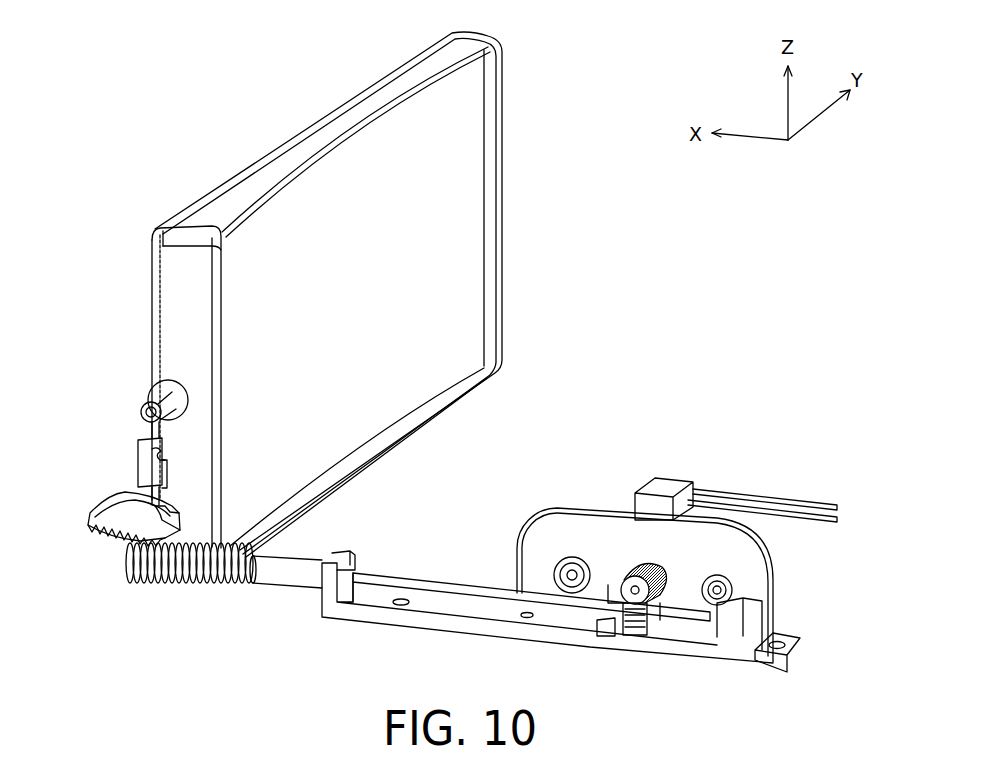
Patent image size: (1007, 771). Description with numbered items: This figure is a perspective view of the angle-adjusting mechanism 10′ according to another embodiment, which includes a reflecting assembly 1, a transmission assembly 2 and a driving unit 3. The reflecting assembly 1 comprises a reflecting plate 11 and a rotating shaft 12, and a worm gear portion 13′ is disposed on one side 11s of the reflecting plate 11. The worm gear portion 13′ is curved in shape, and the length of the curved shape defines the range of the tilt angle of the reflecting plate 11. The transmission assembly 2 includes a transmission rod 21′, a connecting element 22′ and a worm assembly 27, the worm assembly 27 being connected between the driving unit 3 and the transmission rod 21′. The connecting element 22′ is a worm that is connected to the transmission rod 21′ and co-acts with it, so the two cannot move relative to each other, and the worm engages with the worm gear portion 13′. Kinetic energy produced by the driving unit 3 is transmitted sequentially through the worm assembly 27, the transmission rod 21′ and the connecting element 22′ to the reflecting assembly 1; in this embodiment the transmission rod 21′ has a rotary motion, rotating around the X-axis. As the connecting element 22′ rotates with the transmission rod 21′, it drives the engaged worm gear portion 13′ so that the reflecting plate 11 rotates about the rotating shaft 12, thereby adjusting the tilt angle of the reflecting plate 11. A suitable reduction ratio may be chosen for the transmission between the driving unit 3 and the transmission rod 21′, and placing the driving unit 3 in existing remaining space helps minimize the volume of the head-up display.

The angle-adjusting mechanism 10′ is at (80, 21).
The reflecting assembly 1 is at (56, 292).
The reflecting plate 11 is at (170, 310).
The side of the reflecting plate 11s is at (173, 262).
The rotating shaft 12 is at (150, 397).
The worm gear portion 13′ is at (120, 503).
The transmission assembly 2 is at (416, 510).
The transmission rod 21′ is at (370, 585).
The connecting element 22′ is at (183, 582).
The driving unit 3 is at (717, 513).
The worm assembly 27 is at (648, 634).